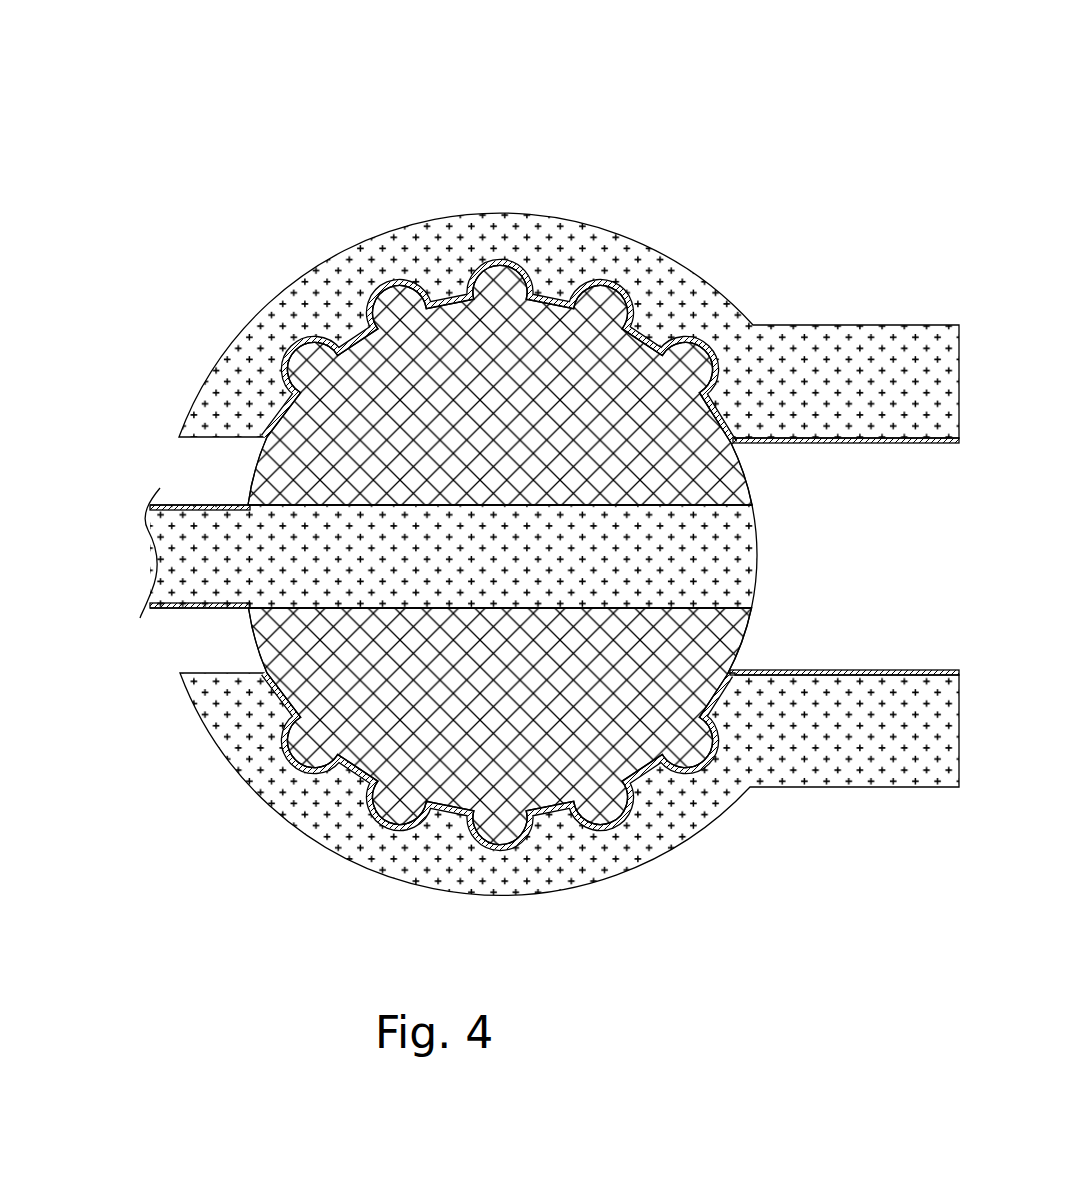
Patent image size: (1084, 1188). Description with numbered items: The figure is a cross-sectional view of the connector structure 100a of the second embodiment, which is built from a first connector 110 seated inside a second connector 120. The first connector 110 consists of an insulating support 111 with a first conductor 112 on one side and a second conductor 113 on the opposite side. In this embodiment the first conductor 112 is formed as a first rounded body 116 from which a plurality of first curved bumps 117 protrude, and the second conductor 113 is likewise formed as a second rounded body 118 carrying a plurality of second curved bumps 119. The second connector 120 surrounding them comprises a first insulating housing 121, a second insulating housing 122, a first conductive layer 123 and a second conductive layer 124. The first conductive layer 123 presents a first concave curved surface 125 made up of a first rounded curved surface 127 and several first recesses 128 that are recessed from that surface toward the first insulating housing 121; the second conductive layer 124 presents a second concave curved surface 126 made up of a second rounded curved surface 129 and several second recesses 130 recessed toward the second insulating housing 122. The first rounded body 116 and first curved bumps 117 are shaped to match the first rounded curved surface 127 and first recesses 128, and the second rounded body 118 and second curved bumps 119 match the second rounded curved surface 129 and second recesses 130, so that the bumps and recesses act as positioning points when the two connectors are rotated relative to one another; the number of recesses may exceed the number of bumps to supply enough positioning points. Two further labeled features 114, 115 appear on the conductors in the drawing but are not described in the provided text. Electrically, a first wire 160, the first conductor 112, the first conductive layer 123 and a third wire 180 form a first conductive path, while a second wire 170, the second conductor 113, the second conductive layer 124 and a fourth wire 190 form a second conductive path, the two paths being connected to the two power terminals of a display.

The connector structure 100a is at (100, 41).
The first connector 110 is at (331, 446).
The insulating support 111 is at (180, 562).
The first conductor 112 is at (530, 349).
The second conductor 113 is at (418, 726).
The first side surface 114 is at (745, 468).
The second side surface 115 is at (745, 645).
The first rounded body 116 is at (625, 373).
The first curved bumps 117 is at (507, 280).
The second rounded body 118 is at (307, 693).
The second curved bumps 119 is at (392, 815).
The second connector 120 is at (649, 230).
The first insulating housing 121 is at (498, 233).
The second insulating housing 122 is at (553, 857).
The first conductive layer 123 is at (270, 437).
The second conductive layer 124 is at (268, 673).
The first concave curved surface 125 is at (447, 196).
The second concave curved surface 126 is at (464, 906).
The first rounded curved surface 127 is at (445, 290).
The first recesses 128 is at (383, 295).
The second rounded curved surface 129 is at (450, 825).
The second recesses 130 is at (288, 768).
The first wire 160 is at (150, 507).
The second wire 170 is at (150, 605).
The third wire 180 is at (933, 443).
The fourth wire 190 is at (933, 670).